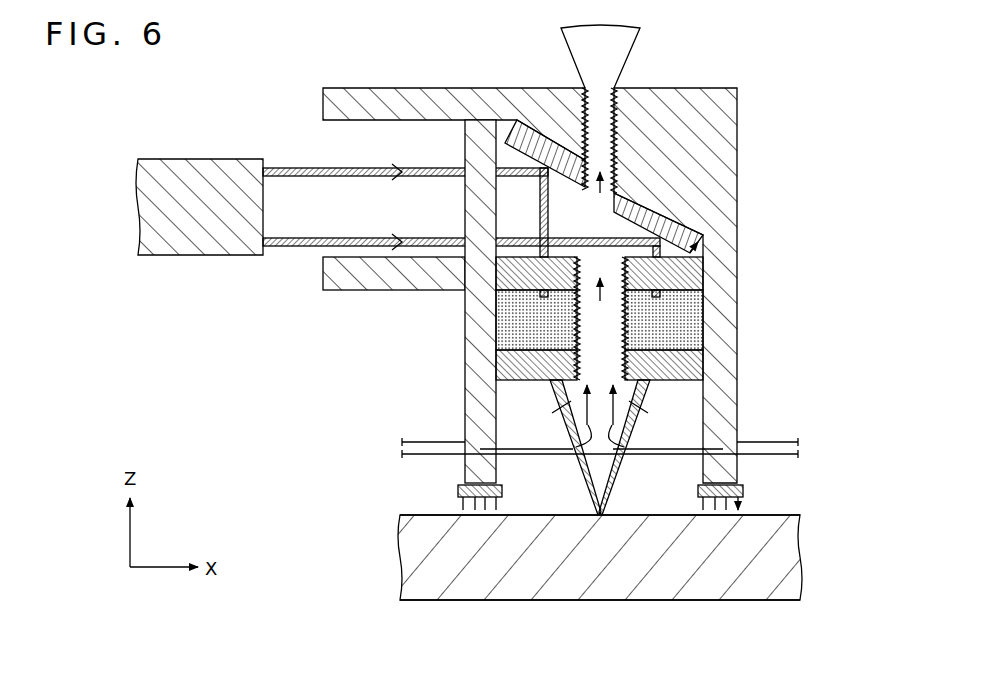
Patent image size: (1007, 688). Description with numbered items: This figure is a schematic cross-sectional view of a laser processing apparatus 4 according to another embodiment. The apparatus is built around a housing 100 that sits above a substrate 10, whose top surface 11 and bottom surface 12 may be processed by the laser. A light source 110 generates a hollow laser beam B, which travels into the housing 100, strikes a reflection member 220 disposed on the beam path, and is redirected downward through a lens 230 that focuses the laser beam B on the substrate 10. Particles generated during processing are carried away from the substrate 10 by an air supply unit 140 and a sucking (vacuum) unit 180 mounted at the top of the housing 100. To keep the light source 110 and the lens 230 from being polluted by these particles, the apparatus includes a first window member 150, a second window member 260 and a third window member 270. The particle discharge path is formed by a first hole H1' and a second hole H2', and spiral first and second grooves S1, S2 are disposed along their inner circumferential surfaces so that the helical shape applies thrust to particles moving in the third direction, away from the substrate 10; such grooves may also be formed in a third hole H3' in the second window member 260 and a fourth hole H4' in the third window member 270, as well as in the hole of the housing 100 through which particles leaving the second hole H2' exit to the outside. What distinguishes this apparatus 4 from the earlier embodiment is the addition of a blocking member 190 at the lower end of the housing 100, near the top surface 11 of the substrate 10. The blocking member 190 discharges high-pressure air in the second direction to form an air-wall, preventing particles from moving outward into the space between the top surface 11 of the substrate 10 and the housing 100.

The laser processing apparatus 4 is at (757, 56).
The substrate 10 is at (790, 553).
The top surface 11 is at (770, 515).
The bottom surface 12 is at (770, 600).
The housing 100 is at (400, 88).
The light source 110 is at (201, 168).
The air supply unit 140 is at (433, 442).
The first window member 150 is at (480, 120).
The sucking unit 180 is at (622, 50).
The blocking member 190 is at (458, 491).
The reflection member 220 is at (697, 235).
The lens 230 is at (670, 323).
The second window member 260 is at (680, 272).
The third window member 270 is at (670, 364).
The laser beam B is at (350, 167).
The first groove S1 is at (640, 293).
The second groove S2 is at (630, 190).
The first hole H1' is at (490, 330).
The second hole H2' is at (709, 185).
The third hole H3' is at (490, 292).
The fourth hole H4' is at (490, 361).